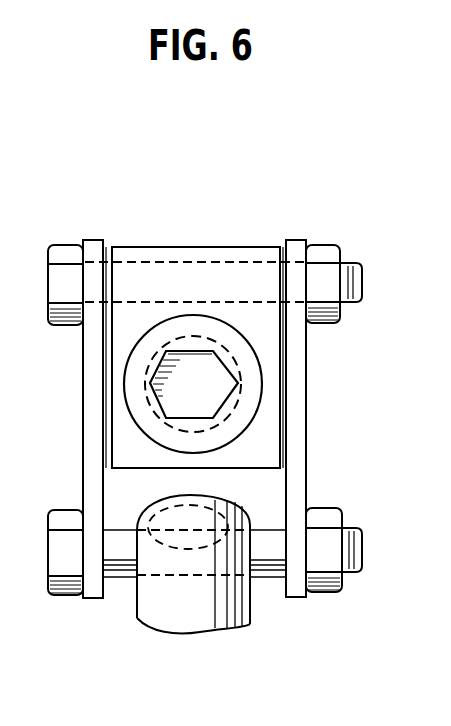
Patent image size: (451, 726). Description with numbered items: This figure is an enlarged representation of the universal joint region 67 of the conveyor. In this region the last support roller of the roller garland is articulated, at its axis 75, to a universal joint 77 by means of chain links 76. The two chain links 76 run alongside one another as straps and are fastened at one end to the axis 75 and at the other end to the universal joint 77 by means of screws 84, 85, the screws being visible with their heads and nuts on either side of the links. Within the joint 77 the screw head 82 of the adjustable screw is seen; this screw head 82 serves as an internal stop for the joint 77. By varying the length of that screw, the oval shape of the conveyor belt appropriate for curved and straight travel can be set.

The universal joint region 67 is at (310, 197).
The axis 75 is at (193, 607).
The chain links 76 is at (92, 437).
The universal joint 77 is at (268, 343).
The screw head 82 is at (150, 371).
The screw 84 is at (362, 264).
The screw 85 is at (356, 531).